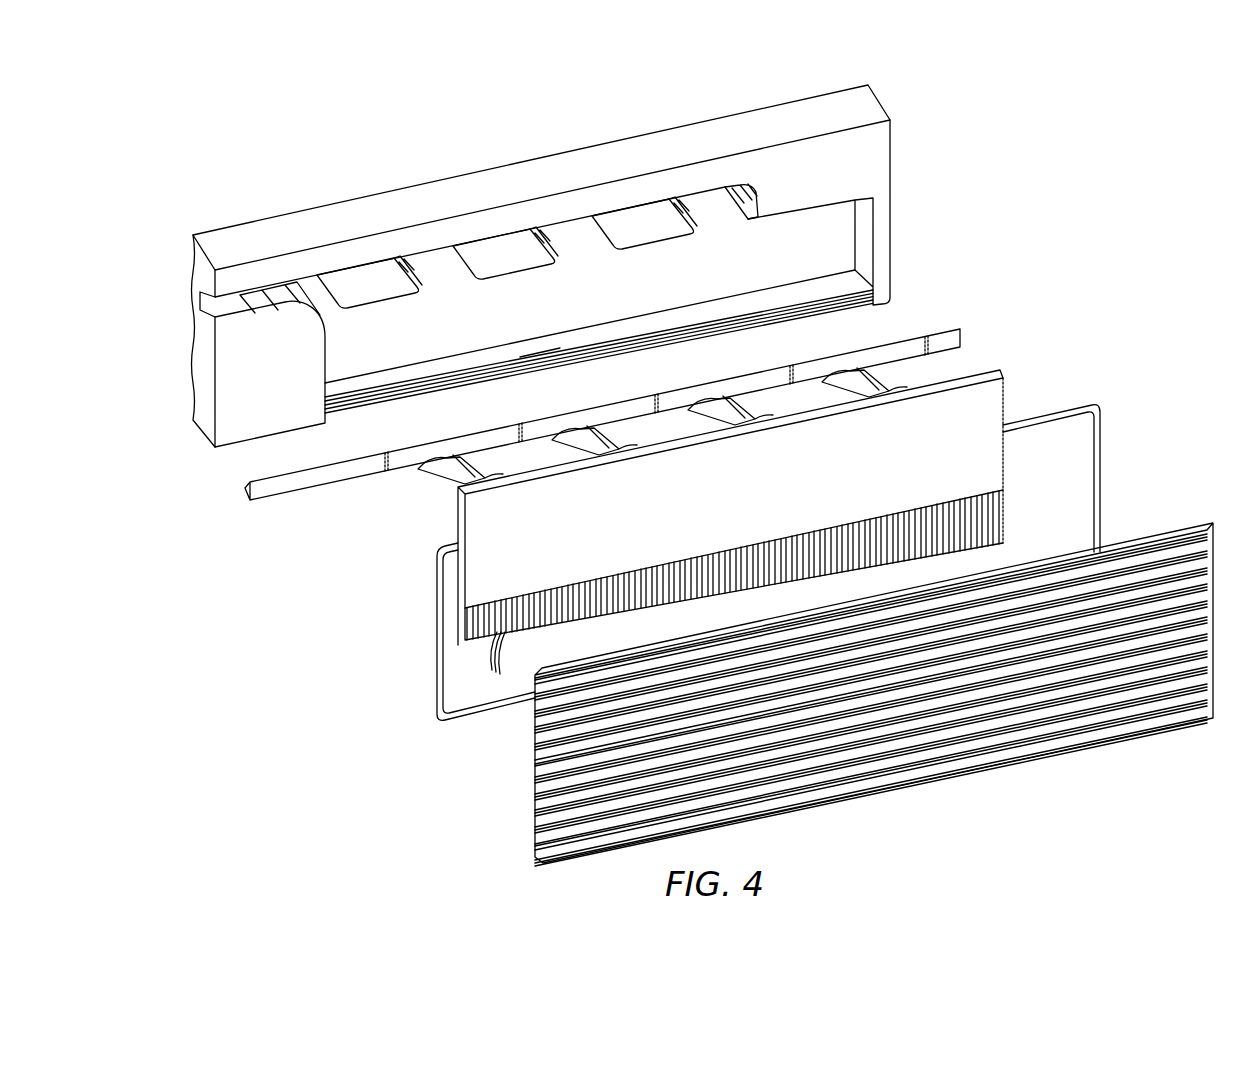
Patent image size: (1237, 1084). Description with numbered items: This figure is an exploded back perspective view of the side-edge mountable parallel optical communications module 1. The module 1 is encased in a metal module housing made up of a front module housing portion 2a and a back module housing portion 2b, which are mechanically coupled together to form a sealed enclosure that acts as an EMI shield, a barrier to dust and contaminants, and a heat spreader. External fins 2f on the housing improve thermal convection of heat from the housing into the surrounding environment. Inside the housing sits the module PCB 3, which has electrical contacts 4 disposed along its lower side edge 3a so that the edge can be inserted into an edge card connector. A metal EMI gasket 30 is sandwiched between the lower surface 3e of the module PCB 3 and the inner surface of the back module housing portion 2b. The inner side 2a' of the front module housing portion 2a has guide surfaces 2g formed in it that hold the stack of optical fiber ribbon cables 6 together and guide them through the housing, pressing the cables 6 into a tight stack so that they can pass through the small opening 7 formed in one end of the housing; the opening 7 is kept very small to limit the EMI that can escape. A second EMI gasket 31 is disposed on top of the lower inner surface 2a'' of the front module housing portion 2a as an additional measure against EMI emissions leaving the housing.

The side-edge mountable parallel optical communications module 1 is at (292, 165).
The front module housing portion 2a is at (559, 264).
The inner side of the front module housing portion 2a' is at (638, 315).
The lower inner surface of the front module housing portion 2a'' is at (599, 351).
The back module housing portion 2b is at (1143, 543).
The external fins 2f is at (1103, 700).
The guide surfaces 2g is at (296, 314).
The module PCB 3 is at (965, 340).
The lower side edge of the module PCB 3a is at (613, 612).
The lower surface of the module PCB 3e is at (985, 400).
The electrical contacts 4 is at (494, 666).
The optical fiber ribbon cables 6 is at (282, 478).
The opening 7 is at (208, 305).
The EMI gasket 30 is at (1062, 413).
The second EMI gasket 31 is at (540, 357).